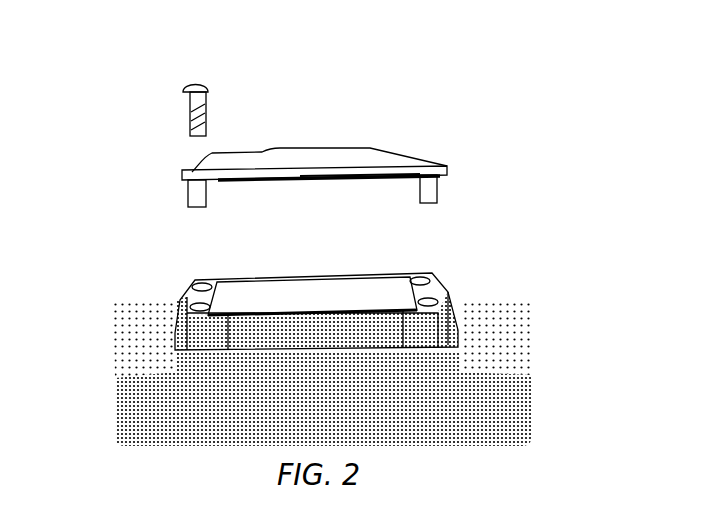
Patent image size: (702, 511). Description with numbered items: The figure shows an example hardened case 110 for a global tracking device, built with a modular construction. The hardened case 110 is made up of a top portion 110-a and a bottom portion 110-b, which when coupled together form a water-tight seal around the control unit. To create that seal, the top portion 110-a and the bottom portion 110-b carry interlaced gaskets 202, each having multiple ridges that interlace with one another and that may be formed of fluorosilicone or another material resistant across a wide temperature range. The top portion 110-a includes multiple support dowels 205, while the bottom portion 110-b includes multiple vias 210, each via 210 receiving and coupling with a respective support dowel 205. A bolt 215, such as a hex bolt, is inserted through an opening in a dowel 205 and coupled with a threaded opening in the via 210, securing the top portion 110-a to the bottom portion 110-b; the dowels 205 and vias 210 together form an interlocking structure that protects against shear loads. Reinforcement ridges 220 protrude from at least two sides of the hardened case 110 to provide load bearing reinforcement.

The hardened case 110 is at (482, 108).
The top portion 110-a is at (392, 150).
The bottom portion 110-b is at (452, 302).
The interlaced gaskets 202 is at (262, 182).
The support dowels 205 is at (185, 192).
The vias 210 is at (190, 283).
The bolt 215 is at (177, 110).
The reinforcement ridges 220 is at (357, 176).